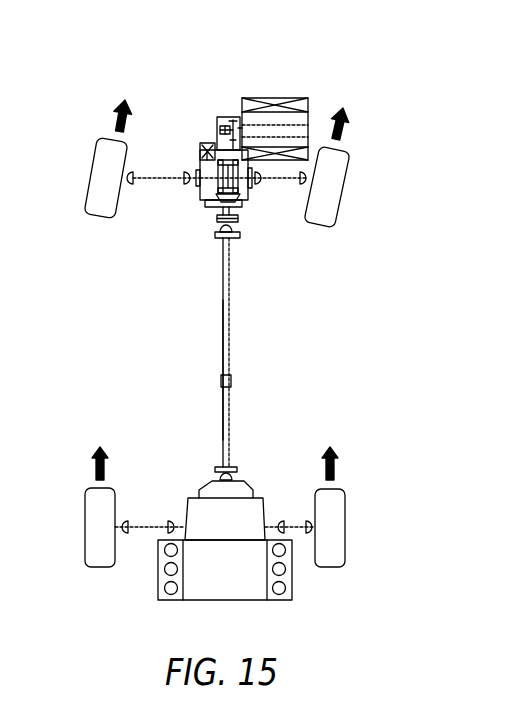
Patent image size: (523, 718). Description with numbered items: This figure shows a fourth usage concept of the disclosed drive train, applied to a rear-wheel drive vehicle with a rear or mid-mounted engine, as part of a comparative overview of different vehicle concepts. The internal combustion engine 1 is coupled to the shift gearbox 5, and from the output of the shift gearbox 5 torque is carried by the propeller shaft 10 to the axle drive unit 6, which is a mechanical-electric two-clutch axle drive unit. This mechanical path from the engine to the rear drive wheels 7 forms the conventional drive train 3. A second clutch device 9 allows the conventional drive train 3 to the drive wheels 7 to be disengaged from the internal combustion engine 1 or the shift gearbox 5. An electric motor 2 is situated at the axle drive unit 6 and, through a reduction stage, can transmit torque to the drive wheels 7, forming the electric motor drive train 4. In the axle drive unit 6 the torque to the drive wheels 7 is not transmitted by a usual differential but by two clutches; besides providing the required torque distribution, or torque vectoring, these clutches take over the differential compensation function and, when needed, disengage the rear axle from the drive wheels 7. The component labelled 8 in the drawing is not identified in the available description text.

The internal combustion engine 1 is at (162, 590).
The electric motor 2 is at (242, 108).
The conventional drive train 3 is at (199, 349).
The electric motor drive train 4 is at (189, 154).
The shift gearbox 5 is at (252, 513).
The axle drive unit 6 is at (223, 182).
The drive wheels 7 is at (95, 548).
The reduction gear 8 is at (218, 128).
The second clutch device 9 is at (238, 220).
The propeller shaft 10 is at (223, 300).